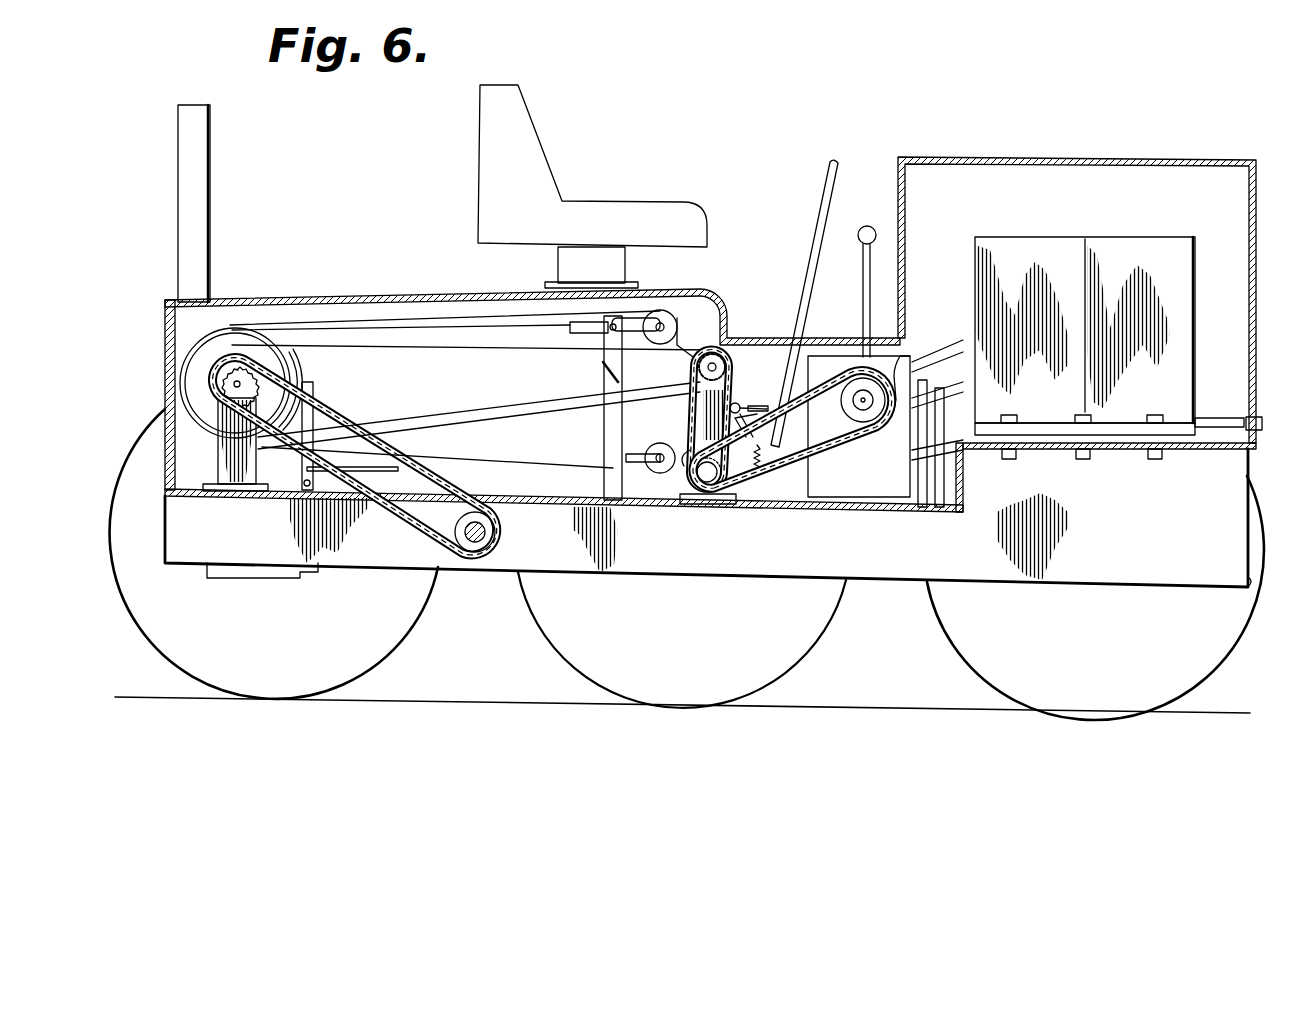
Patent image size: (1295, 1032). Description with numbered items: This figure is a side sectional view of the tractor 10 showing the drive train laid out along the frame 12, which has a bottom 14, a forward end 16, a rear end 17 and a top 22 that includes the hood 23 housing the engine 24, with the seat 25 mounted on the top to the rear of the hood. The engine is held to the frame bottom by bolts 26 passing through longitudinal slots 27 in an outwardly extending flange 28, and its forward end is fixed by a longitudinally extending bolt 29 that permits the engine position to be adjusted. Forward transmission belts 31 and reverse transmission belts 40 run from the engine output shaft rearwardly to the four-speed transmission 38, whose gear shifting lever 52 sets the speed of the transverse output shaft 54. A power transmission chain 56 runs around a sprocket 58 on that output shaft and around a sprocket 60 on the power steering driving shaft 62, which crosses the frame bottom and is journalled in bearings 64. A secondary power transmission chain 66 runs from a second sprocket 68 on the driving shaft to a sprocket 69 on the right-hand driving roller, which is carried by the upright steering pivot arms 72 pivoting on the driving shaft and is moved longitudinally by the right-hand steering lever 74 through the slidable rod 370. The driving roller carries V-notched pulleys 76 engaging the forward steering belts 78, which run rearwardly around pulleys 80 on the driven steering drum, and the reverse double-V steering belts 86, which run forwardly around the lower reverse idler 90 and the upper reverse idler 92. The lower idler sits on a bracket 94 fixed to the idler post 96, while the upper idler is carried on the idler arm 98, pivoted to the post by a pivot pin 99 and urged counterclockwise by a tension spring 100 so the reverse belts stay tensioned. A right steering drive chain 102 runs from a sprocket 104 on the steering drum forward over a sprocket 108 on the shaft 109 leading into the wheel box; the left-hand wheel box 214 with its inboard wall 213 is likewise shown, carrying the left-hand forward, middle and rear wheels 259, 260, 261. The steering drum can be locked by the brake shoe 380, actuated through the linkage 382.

The tractor 10 is at (154, 337).
The frame 12 is at (1224, 460).
The bottom 14 is at (553, 509).
The forward end 16 is at (1250, 582).
The rear end 17 is at (165, 532).
The top 22 is at (376, 298).
The hood 23 is at (1156, 158).
The engine 24 is at (1076, 265).
The seat 25 is at (590, 202).
The bolts 26 is at (1004, 420).
The longitudinal slots 27 is at (1042, 428).
The flange 28 is at (1106, 438).
The longitudinally extending bolt 29 is at (1214, 418).
The forward transmission belts 31 is at (946, 348).
The four-speed transmission 38 is at (902, 485).
The reverse transmission belts 40 is at (946, 460).
The gear shifting lever 52 is at (863, 306).
The transverse output shaft 54 is at (864, 416).
The power transmission chain 56 is at (818, 441).
The sprocket 58 is at (900, 364).
The sprocket 60 is at (712, 484).
The power steering driving shaft 62 is at (704, 482).
The bearings 64 is at (702, 494).
The secondary power transmission chain 66 is at (728, 388).
The second sprocket 68 is at (684, 469).
The sprocket 69 is at (728, 365).
The right-hand upright steering pivot arms 72 is at (696, 418).
The right-hand steering lever 74 is at (806, 274).
The V-notched pulleys 76 is at (735, 338).
The right-hand forward steering belts 78 is at (502, 406).
The pulleys 80 is at (208, 353).
The right-hand reverse double-V steering belts 86 is at (464, 317).
The lower right-hand reverse idler 90 is at (654, 453).
The upper right-hand reverse idler 92 is at (671, 322).
The bracket 94 is at (622, 485).
The idler post 96 is at (604, 436).
The idler arm 98 is at (586, 319).
The pivot pin 99 is at (618, 322).
The tension spring 100 is at (592, 354).
The right steering drive chain 102 is at (412, 533).
The sprocket 104 is at (240, 372).
The sprocket 108 is at (464, 558).
The shaft 109 is at (478, 547).
The inboard wall 213 is at (276, 574).
The left-hand wheel box 214 is at (248, 586).
The left-hand forward wheel 259 is at (1114, 676).
The left-hand middle wheel 260 is at (691, 636).
The left-hand rear wheel 261 is at (292, 648).
The slidable rod 370 is at (750, 395).
The brake shoe 380 is at (300, 372).
The linkage 382 is at (378, 486).